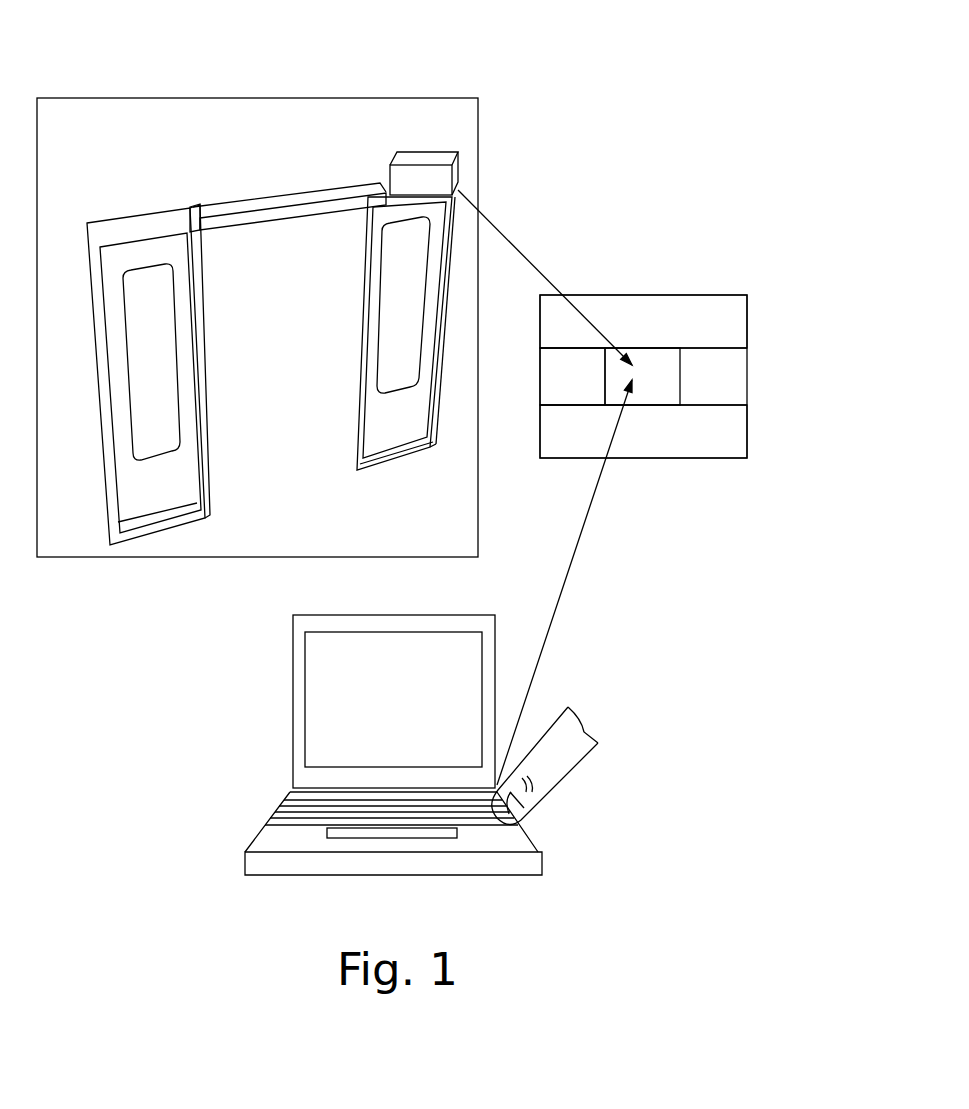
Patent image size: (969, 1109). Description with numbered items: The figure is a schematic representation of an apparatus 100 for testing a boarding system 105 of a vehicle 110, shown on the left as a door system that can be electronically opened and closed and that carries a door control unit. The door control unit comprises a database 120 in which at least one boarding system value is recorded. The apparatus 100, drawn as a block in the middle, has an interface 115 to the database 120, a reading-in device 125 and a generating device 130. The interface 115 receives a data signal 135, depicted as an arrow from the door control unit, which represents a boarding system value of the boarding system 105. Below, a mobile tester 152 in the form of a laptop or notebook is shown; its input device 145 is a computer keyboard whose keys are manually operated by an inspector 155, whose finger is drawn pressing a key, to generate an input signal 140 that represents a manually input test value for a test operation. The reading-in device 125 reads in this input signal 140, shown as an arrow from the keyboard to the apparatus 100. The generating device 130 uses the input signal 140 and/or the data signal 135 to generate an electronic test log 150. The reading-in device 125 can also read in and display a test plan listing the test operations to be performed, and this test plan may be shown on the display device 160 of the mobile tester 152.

The apparatus 100 is at (663, 280).
The boarding system 105 is at (127, 120).
The vehicle 110 is at (260, 98).
The interface 115 is at (733, 317).
The database 120 is at (443, 152).
The reading-in device 125 is at (733, 430).
The generating device 130 is at (567, 388).
The data signal 135 is at (505, 232).
The input signal 140 is at (573, 548).
The input device 145 is at (280, 803).
The electronic test log 150 is at (662, 375).
The mobile tester 152 is at (287, 633).
The inspector 155 is at (558, 767).
The display device 160 is at (323, 700).